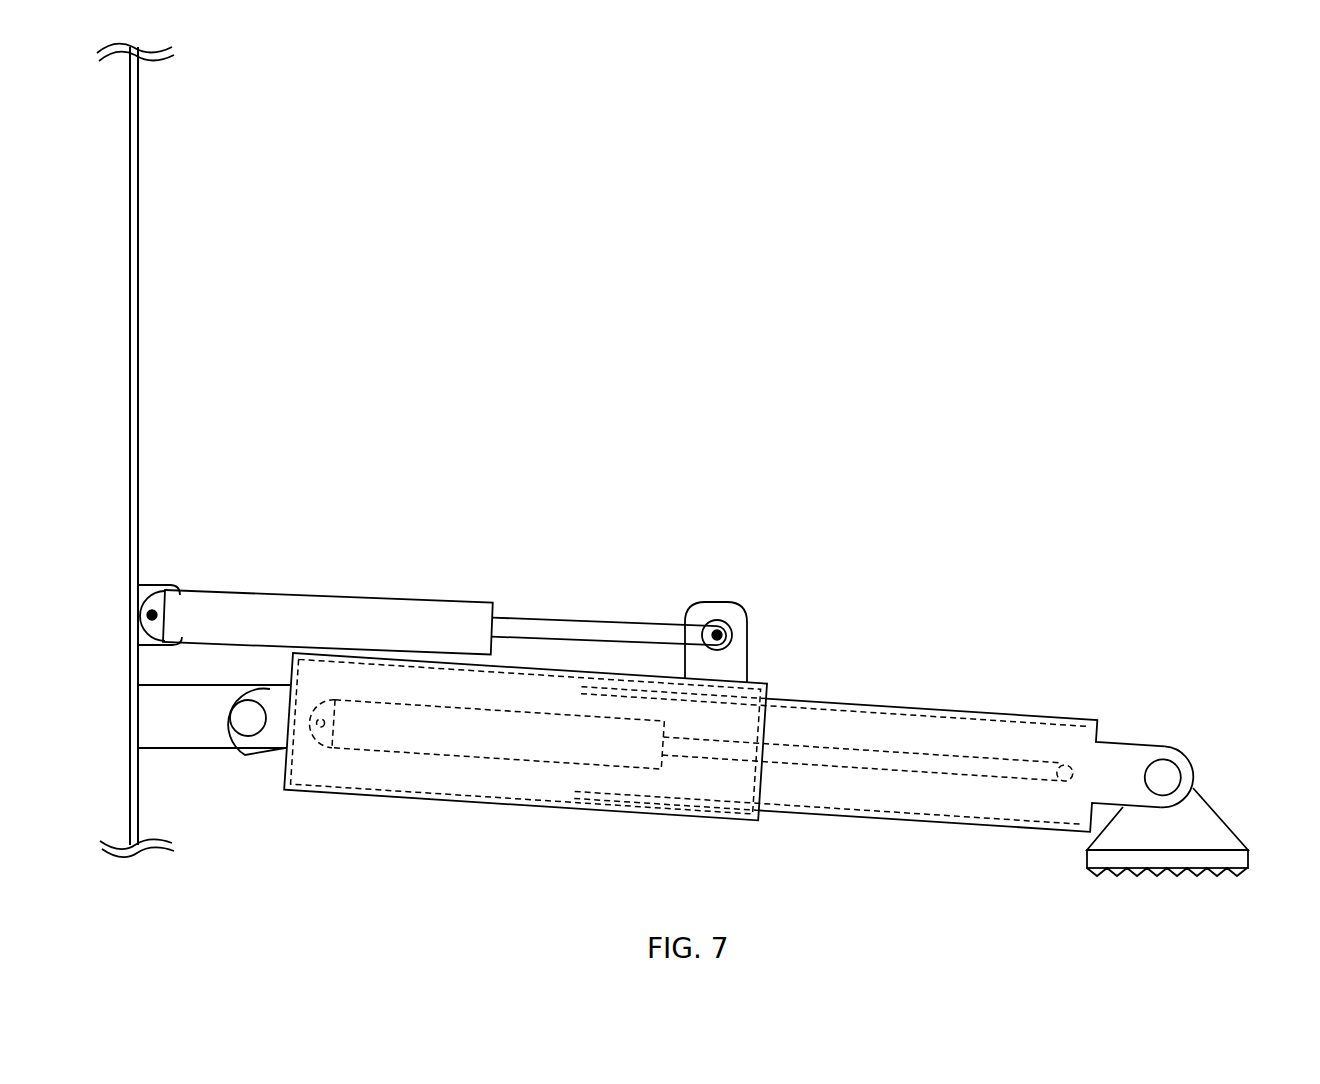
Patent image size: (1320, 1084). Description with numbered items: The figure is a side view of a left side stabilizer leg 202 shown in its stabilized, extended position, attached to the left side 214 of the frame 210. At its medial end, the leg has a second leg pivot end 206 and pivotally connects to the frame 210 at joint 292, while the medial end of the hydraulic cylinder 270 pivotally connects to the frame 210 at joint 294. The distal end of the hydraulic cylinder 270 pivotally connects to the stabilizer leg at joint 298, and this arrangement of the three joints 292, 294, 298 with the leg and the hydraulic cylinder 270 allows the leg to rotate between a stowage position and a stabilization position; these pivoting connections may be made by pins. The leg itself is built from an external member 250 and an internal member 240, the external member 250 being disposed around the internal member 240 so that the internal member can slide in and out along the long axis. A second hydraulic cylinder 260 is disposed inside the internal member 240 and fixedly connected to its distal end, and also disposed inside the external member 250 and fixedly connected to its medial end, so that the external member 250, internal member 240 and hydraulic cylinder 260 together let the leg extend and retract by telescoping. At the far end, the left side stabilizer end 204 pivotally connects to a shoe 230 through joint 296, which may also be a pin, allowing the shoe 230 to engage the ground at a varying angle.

The left side stabilizer leg 202 is at (754, 357).
The left side stabilizer end 204 is at (1160, 748).
The second leg pivot end 206 is at (216, 716).
The frame 210 is at (132, 851).
The left side 214 is at (138, 296).
The shoe 230 is at (1195, 835).
The internal member 240 is at (932, 708).
The external member 250 is at (420, 803).
The hydraulic cylinder 260 is at (523, 735).
The hydraulic cylinder 270 is at (345, 623).
The joint 292 is at (247, 720).
The joint 294 is at (152, 609).
The joint 296 is at (1163, 778).
The joint 298 is at (728, 628).